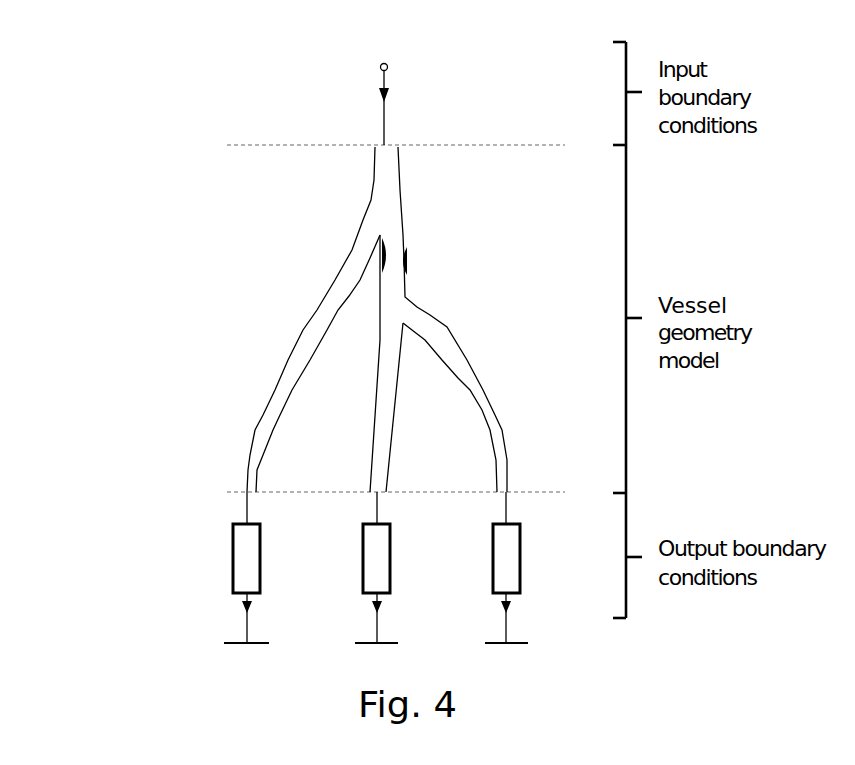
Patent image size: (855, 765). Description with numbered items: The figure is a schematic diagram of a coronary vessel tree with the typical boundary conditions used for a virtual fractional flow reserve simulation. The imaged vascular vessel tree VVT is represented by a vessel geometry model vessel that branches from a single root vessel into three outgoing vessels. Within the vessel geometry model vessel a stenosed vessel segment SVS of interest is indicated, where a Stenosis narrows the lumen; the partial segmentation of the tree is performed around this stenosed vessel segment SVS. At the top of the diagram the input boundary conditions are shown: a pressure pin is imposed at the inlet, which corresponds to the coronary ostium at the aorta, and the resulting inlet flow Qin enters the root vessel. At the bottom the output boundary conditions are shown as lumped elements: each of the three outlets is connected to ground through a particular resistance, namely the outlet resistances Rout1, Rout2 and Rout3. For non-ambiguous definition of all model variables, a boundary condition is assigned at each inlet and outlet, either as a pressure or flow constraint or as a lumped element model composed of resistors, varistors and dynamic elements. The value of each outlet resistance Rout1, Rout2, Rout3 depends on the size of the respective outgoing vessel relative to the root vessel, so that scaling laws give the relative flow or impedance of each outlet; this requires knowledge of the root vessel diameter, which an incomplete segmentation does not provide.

The vascular vessel tree VVT is at (160, 156).
The stenosed vessel segment SVS is at (405, 270).
The stenosis Stenosis is at (412, 257).
The inlet pressure pin is at (325, 65).
The inlet flow Qin is at (399, 108).
The vessel geometry model vessel is at (377, 319).
The outlet resistance Rout1 is at (271, 567).
The outlet resistance Rout2 is at (402, 567).
The outlet resistance Rout3 is at (532, 567).